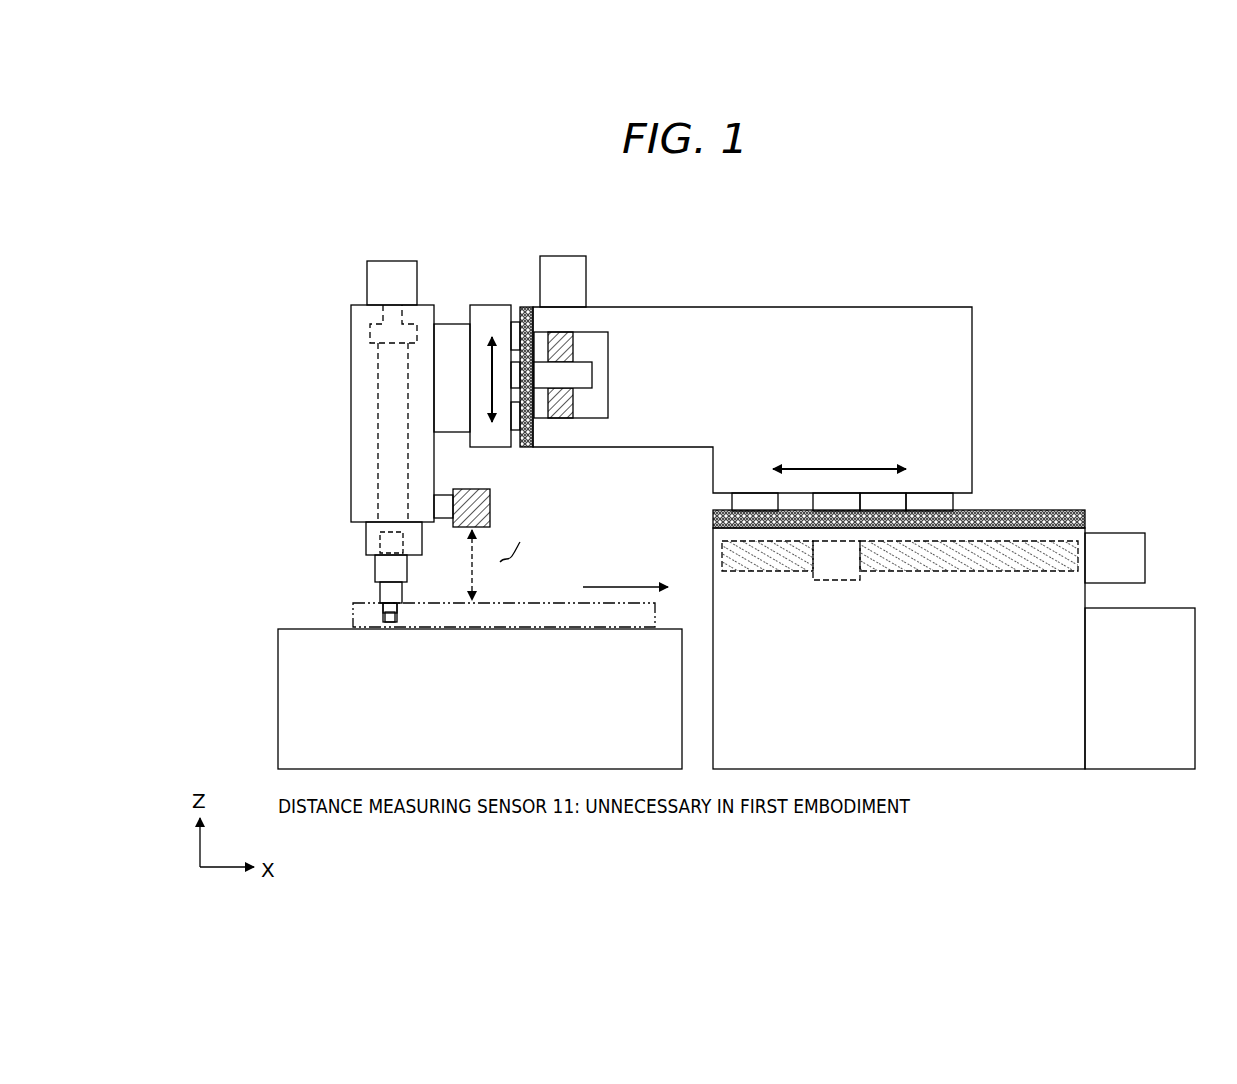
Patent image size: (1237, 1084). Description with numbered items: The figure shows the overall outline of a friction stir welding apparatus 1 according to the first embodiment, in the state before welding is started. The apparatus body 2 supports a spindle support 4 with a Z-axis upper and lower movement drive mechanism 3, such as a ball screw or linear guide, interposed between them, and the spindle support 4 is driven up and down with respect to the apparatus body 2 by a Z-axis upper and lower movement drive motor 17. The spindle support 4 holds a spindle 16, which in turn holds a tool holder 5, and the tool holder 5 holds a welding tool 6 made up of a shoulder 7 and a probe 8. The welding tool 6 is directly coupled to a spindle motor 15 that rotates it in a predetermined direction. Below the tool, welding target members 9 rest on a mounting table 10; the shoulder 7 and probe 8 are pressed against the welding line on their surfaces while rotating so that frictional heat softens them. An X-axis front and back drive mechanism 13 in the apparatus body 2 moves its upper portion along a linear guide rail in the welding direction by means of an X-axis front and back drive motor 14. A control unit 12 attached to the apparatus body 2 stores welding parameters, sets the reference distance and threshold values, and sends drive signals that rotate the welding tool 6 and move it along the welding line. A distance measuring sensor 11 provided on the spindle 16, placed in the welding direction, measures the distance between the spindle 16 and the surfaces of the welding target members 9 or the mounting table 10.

The friction stir welding apparatus 1 is at (800, 237).
The apparatus body 2 is at (869, 307).
The Z-axis upper and lower movement drive mechanism 3 is at (577, 452).
The spindle support 4 is at (511, 297).
The tool holder 5 is at (366, 538).
The welding tool 6 is at (348, 558).
The shoulder 7 is at (380, 606).
The probe 8 is at (392, 614).
The welding target members 9 is at (572, 620).
The mounting table 10 is at (278, 660).
The distance measuring sensor 11 is at (470, 489).
The control unit 12 is at (1165, 608).
The X-axis front and back drive mechanism 13 is at (706, 475).
The X-axis front and back drive motor 14 is at (1122, 533).
The spindle motor 15 is at (367, 282).
The spindle 16 is at (351, 380).
The Z-axis upper and lower movement drive motor 17 is at (586, 266).